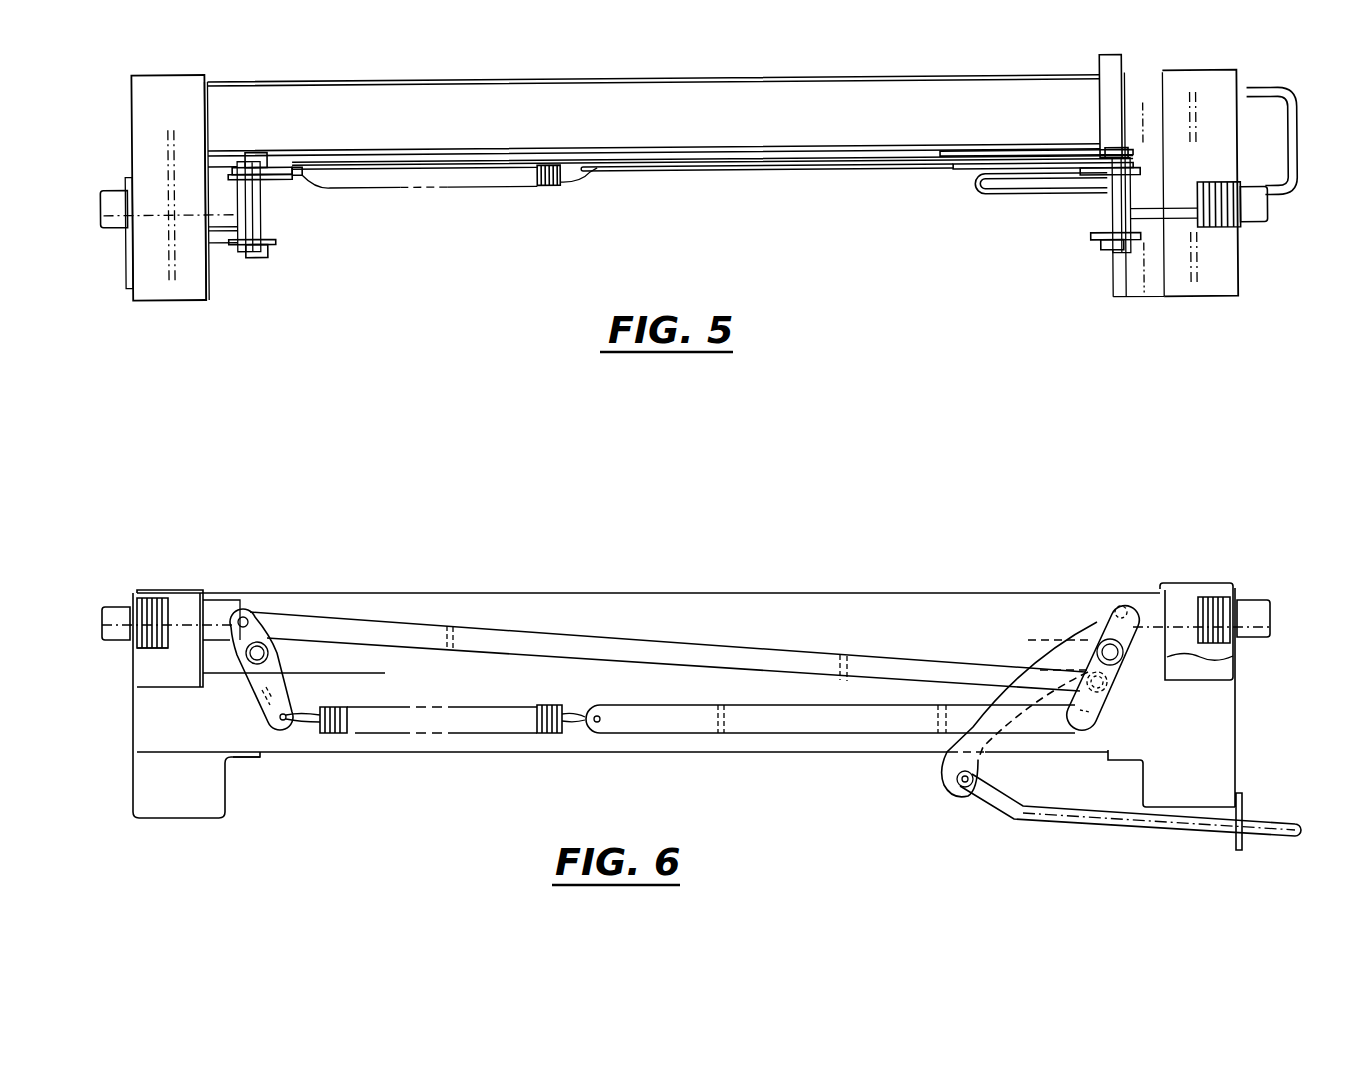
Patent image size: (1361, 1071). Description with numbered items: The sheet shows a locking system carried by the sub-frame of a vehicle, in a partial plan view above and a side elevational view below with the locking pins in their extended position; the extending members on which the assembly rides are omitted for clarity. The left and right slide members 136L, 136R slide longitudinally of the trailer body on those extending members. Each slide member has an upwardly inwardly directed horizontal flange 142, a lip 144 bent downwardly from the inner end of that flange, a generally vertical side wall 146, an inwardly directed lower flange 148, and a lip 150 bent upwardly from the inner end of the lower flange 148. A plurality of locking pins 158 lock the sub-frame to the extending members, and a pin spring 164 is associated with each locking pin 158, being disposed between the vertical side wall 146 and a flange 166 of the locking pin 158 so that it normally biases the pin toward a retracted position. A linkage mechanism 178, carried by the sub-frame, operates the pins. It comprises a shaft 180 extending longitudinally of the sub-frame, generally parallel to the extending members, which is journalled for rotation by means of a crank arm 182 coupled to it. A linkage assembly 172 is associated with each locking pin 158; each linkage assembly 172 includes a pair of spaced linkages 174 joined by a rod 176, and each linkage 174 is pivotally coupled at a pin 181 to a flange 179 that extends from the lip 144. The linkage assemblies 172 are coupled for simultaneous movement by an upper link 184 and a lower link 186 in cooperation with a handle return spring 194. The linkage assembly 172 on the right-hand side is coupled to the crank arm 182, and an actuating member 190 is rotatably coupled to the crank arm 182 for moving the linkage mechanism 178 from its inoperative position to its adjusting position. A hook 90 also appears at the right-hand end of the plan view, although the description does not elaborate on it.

In FIG. 5, the hook 90 is at (1290, 172).
In FIG. 6, the left slide member 136L is at (129, 781).
In FIG. 6, the right slide member 136R is at (1246, 757).
In FIG. 5, the upper horizontal flange 142 is at (183, 111).
In FIG. 6, the upper horizontal flange 142 is at (169, 592).
In FIG. 6, the lip 144 is at (208, 600).
In FIG. 6, the vertical side wall 146 is at (133, 702).
In FIG. 6, the lower flange 148 is at (192, 818).
In FIG. 6, the lip 150 is at (250, 760).
In FIG. 5, the locking pin 158 is at (113, 224).
In FIG. 6, the locking pin 158 is at (103, 613).
In FIG. 5, the pin spring 164 is at (1237, 262).
In FIG. 6, the pin spring 164 is at (151, 597).
In FIG. 6, the flange 166 is at (152, 649).
In FIG. 5, the linkage assembly 172 is at (268, 184).
In FIG. 6, the linkage assembly 172 is at (287, 691).
In FIG. 5, the linkage 174 is at (281, 168).
In FIG. 6, the linkage 174 is at (267, 702).
In FIG. 5, the rod 176 is at (240, 252).
In FIG. 6, the rod 176 is at (250, 617).
In FIG. 6, the linkage mechanism 178 is at (1090, 605).
In FIG. 5, the flange 179 is at (217, 151).
In FIG. 6, the flange 179 is at (218, 675).
In FIG. 5, the shaft 180 is at (1108, 79).
In FIG. 5, the pin 181 is at (257, 153).
In FIG. 6, the pin 181 is at (272, 655).
In FIG. 5, the crank arm 182 is at (992, 160).
In FIG. 6, the crank arm 182 is at (945, 770).
In FIG. 5, the upper link 184 is at (640, 168).
In FIG. 6, the upper link 184 is at (725, 650).
In FIG. 5, the lower link 186 is at (760, 175).
In FIG. 6, the lower link 186 is at (770, 733).
In FIG. 6, the actuating member 190 is at (1140, 830).
In FIG. 5, the handle return spring 194 is at (559, 190).
In FIG. 6, the handle return spring 194 is at (550, 735).